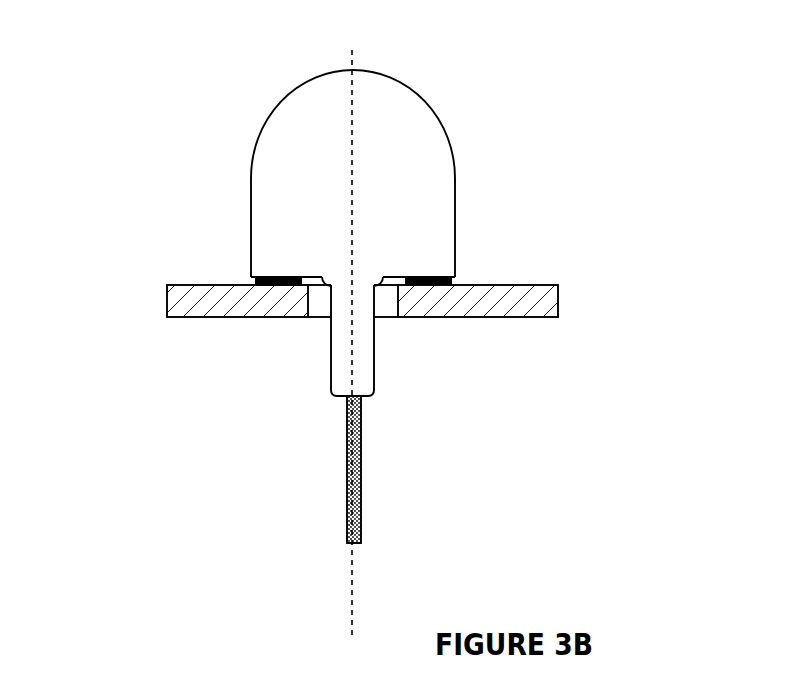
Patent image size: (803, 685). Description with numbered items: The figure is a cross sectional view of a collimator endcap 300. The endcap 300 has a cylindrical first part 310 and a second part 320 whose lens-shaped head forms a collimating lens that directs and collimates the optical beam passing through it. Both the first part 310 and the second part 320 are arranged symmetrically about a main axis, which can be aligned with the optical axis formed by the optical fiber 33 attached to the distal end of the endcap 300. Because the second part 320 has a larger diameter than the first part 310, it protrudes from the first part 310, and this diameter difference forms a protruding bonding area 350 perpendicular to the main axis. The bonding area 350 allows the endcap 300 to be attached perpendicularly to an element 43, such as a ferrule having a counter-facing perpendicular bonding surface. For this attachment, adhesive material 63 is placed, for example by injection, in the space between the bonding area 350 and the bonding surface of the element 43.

The collimator endcap 300 is at (470, 104).
The second part 320 is at (251, 186).
The first part 310 is at (363, 337).
The optical fiber 33 is at (361, 497).
The element 43 is at (566, 307).
The bonding area 350 is at (222, 281).
The adhesive material 63 is at (278, 286).